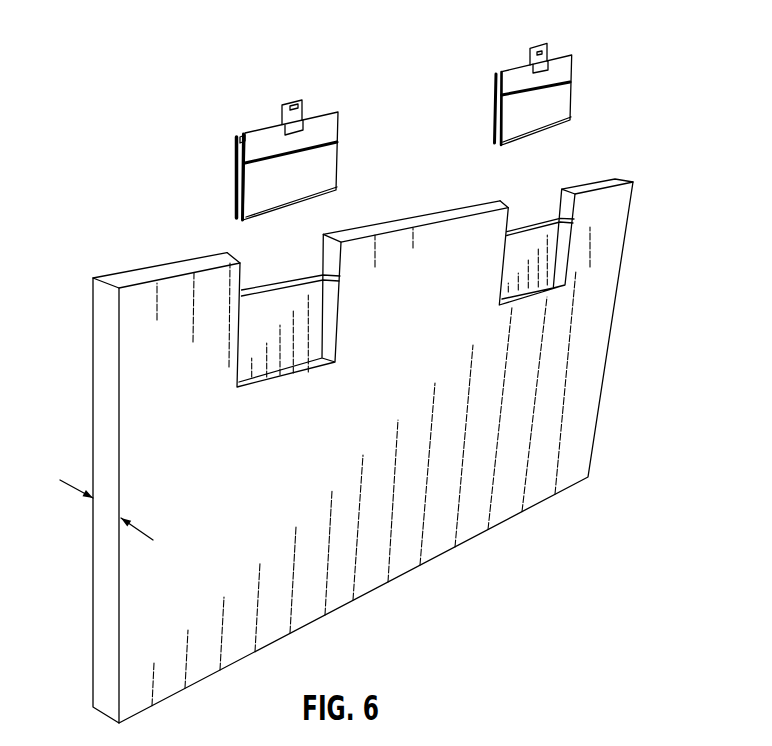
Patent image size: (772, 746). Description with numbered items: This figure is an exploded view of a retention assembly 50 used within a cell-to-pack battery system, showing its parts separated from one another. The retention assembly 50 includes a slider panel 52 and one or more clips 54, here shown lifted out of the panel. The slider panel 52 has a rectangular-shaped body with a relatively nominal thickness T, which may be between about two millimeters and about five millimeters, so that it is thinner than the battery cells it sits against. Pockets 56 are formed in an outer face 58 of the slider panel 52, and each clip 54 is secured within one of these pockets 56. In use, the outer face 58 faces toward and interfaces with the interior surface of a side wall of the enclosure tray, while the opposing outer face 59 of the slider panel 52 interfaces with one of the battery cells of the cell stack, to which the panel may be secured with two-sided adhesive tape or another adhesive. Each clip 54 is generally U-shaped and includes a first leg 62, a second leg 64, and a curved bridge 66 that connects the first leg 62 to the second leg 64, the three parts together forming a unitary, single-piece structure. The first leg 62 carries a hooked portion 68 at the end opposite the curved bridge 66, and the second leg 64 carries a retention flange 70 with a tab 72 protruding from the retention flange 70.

The retention assembly 50 is at (392, 369).
The slider panel 52 is at (342, 451).
The clip 54 is at (377, 124).
The pocket 56 is at (283, 353).
The outer face 58 is at (433, 320).
The opposing outer face 59 is at (93, 408).
The first leg 62 is at (236, 174).
The second leg 64 is at (322, 171).
The curved bridge 66 is at (236, 219).
The hooked portion 68 is at (242, 137).
The retention flange 70 is at (320, 123).
The tab 72 is at (285, 102).
The thickness T is at (66, 494).